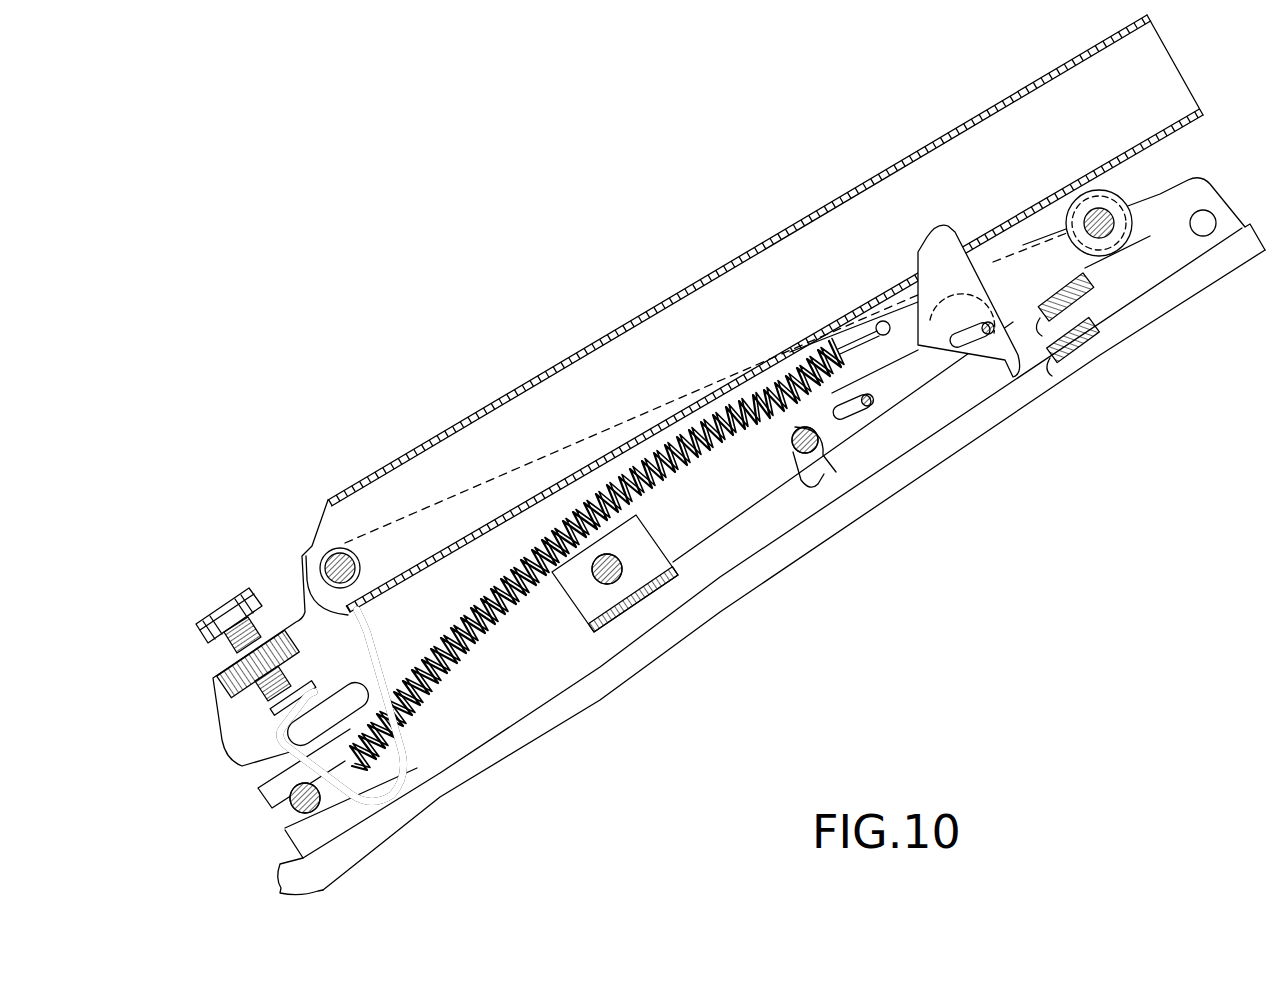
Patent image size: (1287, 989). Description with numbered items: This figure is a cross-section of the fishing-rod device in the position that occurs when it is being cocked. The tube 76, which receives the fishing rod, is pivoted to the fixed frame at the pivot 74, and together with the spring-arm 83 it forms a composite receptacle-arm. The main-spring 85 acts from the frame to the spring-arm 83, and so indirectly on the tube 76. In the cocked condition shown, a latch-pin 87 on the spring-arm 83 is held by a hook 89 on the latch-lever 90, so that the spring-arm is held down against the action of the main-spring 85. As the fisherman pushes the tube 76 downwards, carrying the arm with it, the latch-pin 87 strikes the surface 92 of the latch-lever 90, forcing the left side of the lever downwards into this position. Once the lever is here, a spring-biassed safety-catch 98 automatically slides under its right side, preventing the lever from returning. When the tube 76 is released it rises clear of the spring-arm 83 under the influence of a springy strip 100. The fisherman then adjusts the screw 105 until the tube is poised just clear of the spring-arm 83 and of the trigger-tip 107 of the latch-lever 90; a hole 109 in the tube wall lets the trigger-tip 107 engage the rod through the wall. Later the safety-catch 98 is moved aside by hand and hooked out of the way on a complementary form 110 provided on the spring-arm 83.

The pivot 74 is at (323, 556).
The tube 76 is at (565, 360).
The spring-arm 83 is at (673, 552).
The main-spring 85 is at (442, 682).
The latch-pin 87 is at (790, 433).
The hook 89 is at (787, 437).
The latch-lever 90 is at (1000, 427).
The surface 92 is at (812, 450).
The safety-catch 98 is at (1063, 380).
The springy strip 100 is at (417, 768).
The screw 105 is at (197, 638).
The trigger-tip 107 is at (937, 238).
The hole 109 is at (850, 325).
The complementary form 110 is at (1090, 300).